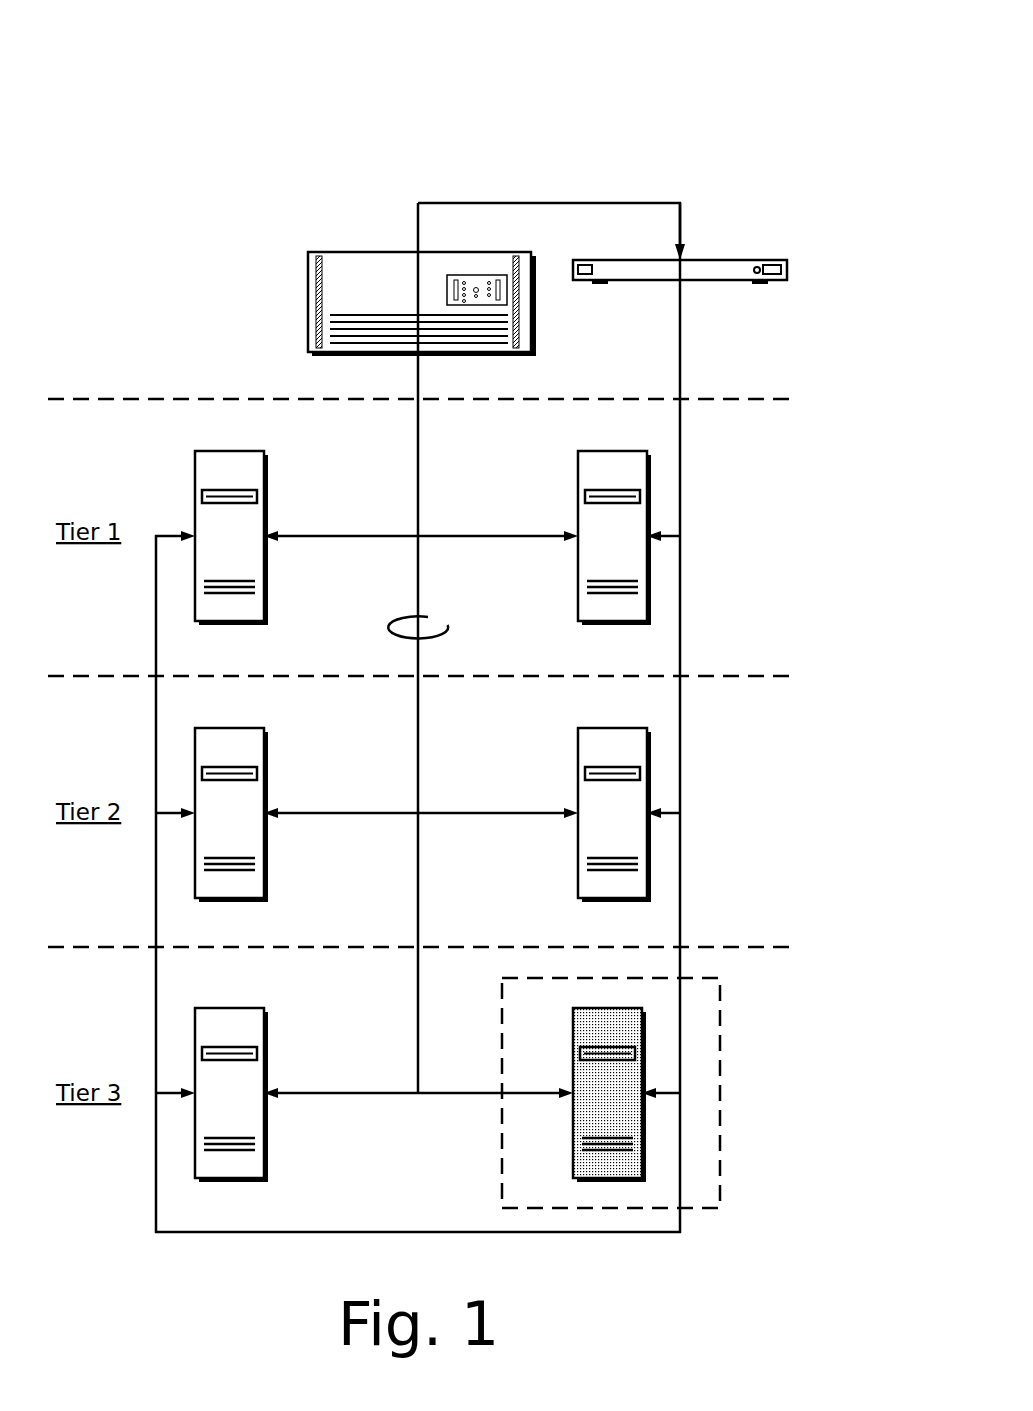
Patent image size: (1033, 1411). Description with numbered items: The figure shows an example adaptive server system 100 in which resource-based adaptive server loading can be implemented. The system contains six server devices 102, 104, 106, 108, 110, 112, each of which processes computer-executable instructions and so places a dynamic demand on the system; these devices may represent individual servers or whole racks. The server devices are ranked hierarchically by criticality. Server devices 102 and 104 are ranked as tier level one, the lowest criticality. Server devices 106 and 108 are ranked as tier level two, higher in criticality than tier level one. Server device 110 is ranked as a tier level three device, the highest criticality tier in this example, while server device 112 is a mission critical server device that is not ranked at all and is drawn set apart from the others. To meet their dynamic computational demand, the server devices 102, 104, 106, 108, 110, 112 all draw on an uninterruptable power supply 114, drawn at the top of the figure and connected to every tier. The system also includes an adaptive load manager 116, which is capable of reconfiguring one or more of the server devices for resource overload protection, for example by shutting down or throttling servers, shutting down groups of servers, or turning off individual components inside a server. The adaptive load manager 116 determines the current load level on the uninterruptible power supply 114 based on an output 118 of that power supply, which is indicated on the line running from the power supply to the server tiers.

The adaptive server system 100 is at (713, 70).
The server device 102 is at (257, 538).
The server device 104 is at (586, 538).
The server device 106 is at (257, 815).
The server device 108 is at (586, 815).
The server device 110 is at (257, 1095).
The server device 112 is at (583, 1095).
The uninterruptable power supply 114 is at (330, 252).
The adaptive load manager 116 is at (712, 260).
The output 118 is at (441, 607).